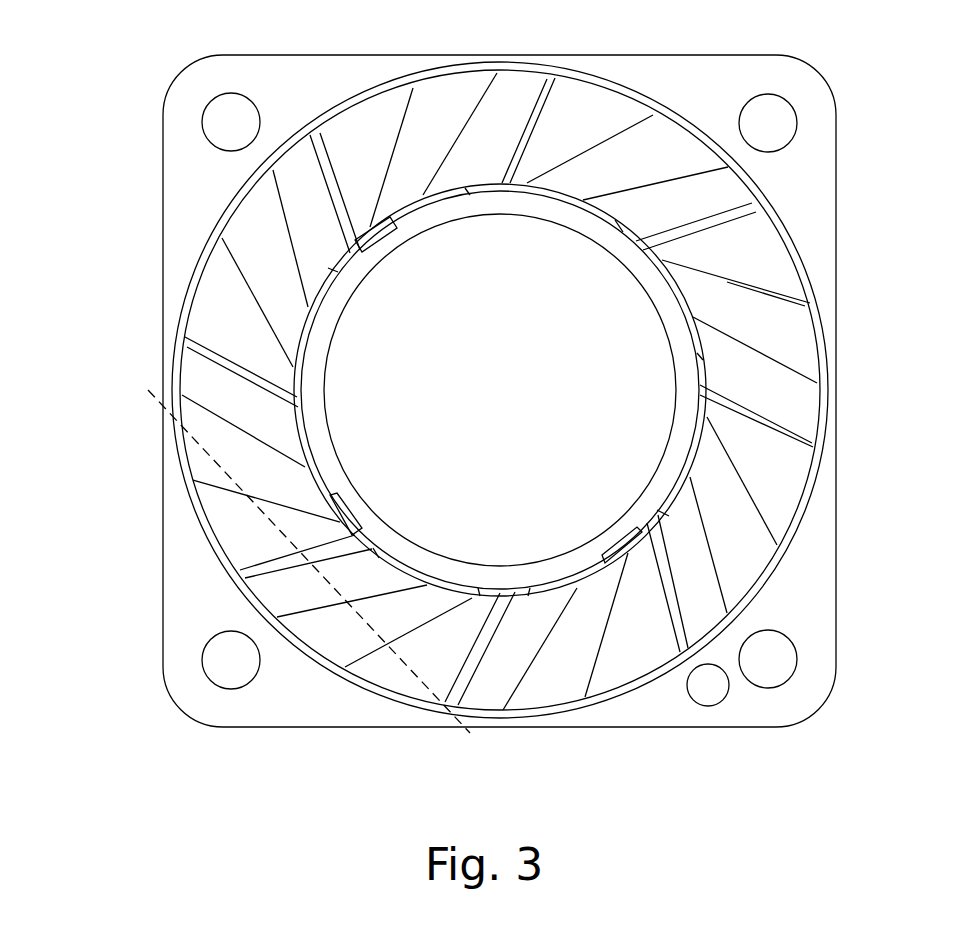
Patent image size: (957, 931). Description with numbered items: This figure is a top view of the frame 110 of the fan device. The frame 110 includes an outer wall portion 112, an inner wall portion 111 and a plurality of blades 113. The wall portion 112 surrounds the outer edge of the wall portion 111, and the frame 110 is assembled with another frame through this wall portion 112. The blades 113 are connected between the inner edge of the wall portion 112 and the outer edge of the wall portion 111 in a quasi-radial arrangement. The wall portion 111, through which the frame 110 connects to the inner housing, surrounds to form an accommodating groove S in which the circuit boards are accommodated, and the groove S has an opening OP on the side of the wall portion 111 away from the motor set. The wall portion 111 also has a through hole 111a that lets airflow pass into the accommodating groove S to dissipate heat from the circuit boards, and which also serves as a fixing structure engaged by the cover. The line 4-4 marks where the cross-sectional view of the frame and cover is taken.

The frame 110 is at (117, 34).
The wall portion 112 is at (180, 190).
The wall portion 111 is at (328, 318).
The through hole 111a is at (343, 512).
The blades 113 is at (700, 567).
The accommodating groove S is at (628, 387).
The opening OP is at (672, 442).
The line 4- 4 is at (142, 391).